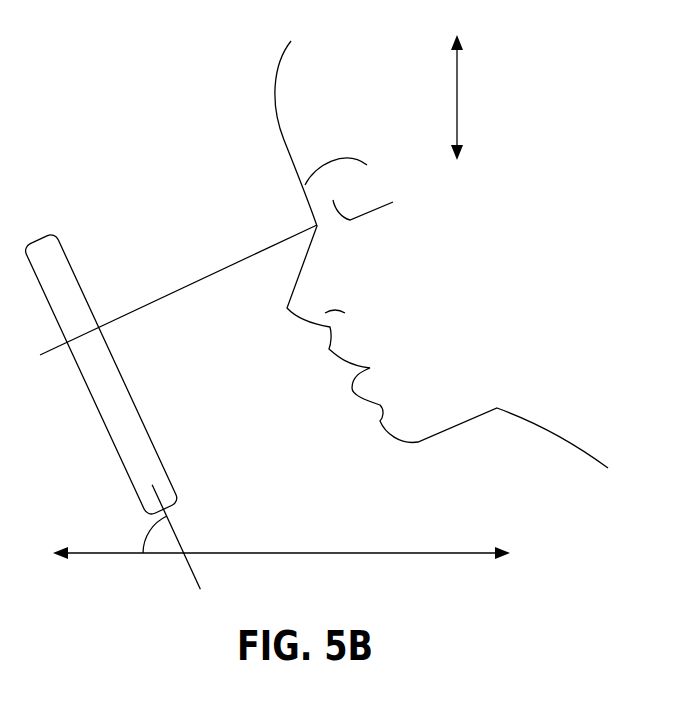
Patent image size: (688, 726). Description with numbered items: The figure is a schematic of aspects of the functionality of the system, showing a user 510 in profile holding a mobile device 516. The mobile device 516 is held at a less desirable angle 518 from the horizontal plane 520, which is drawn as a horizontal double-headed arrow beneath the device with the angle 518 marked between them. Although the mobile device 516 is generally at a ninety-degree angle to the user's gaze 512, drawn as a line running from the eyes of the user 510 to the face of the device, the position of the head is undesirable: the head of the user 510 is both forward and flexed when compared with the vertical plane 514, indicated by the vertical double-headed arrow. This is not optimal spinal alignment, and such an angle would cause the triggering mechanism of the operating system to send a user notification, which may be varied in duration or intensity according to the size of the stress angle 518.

The user 510 is at (203, 78).
The user's gaze 512 is at (207, 276).
The vertical plane 514 is at (458, 116).
The mobile device 516 is at (70, 262).
The angle 518 is at (143, 539).
The horizontal plane 520 is at (443, 553).